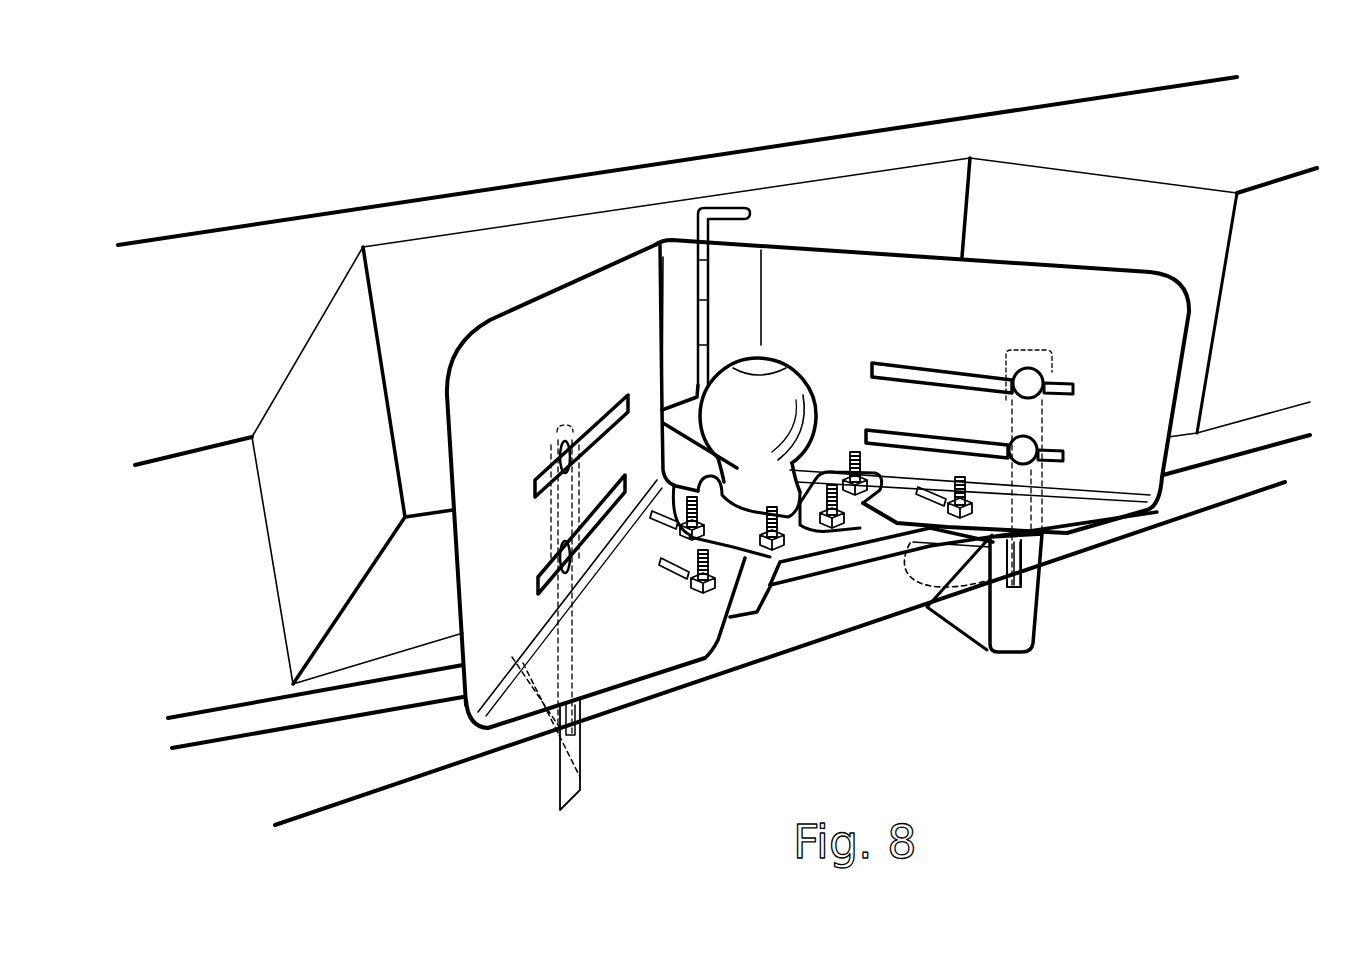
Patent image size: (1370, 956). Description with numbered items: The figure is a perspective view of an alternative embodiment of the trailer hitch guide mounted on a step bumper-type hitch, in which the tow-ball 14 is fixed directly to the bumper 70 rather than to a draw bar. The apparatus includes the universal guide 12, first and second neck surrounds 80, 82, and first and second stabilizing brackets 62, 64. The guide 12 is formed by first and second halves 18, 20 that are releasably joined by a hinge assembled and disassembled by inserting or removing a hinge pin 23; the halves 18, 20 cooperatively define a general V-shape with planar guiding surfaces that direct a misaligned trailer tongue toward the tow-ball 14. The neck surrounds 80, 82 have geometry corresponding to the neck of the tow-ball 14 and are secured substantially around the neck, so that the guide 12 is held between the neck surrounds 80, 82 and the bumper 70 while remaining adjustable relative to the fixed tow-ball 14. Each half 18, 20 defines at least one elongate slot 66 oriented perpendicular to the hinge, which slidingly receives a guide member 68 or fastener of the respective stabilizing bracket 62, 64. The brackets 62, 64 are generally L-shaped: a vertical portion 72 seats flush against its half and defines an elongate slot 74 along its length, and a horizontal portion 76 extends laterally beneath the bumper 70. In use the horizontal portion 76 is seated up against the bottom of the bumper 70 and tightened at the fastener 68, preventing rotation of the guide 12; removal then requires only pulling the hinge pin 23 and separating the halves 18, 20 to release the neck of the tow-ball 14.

The guide 12 is at (878, 226).
The tow-ball 14 is at (795, 393).
The first half 18 is at (565, 302).
The second half 20 is at (1040, 283).
The hinge pin 23 is at (748, 212).
The first stabilizing bracket 62 is at (585, 756).
The second stabilizing bracket 64 is at (1025, 630).
The elongate slot 66 is at (610, 415).
The guide member 68 is at (565, 470).
The bumper 70 is at (335, 762).
The vertical portion 72 is at (1032, 582).
The elongate slot 74 is at (1030, 541).
The horizontal portion 76 is at (968, 596).
The first neck surround 80 is at (752, 545).
The second neck surround 82 is at (850, 520).